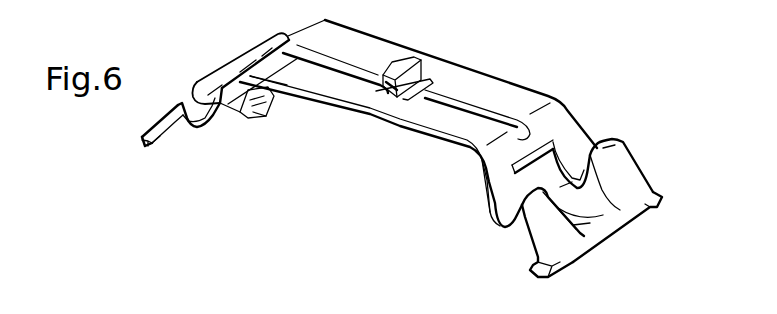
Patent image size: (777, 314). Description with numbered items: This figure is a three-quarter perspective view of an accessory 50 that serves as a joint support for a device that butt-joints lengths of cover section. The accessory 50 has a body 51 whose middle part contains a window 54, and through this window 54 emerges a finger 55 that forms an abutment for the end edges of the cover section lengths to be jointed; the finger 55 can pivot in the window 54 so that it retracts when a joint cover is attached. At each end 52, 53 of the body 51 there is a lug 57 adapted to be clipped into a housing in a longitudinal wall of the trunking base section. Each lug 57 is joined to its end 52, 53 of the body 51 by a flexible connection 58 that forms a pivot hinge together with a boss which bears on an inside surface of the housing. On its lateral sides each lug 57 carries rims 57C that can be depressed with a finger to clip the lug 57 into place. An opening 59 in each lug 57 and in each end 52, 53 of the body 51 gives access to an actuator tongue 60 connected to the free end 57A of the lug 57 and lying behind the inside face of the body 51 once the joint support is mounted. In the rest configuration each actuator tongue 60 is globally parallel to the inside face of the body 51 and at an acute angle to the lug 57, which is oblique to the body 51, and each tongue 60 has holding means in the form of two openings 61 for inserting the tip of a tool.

The accessory 50 is at (446, 53).
The body 51 is at (487, 83).
The end of the body 52 is at (228, 115).
The end of the body 53 is at (482, 176).
The window 54 is at (400, 100).
The finger 55 is at (408, 62).
The lug 57 is at (173, 118).
The free end of the lug 57A is at (590, 250).
The rims 57C is at (148, 146).
The flexible connection 58 is at (276, 42).
The opening 59 is at (287, 84).
The actuator tongue 60 is at (590, 218).
The openings 61 is at (262, 115).